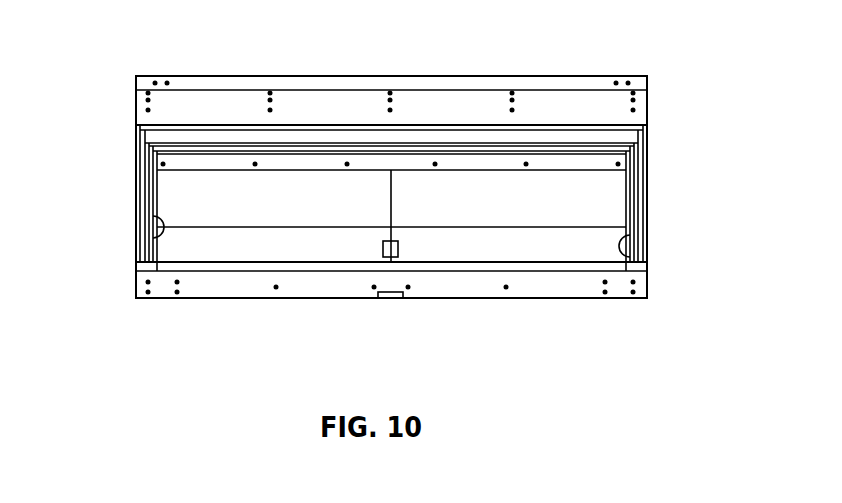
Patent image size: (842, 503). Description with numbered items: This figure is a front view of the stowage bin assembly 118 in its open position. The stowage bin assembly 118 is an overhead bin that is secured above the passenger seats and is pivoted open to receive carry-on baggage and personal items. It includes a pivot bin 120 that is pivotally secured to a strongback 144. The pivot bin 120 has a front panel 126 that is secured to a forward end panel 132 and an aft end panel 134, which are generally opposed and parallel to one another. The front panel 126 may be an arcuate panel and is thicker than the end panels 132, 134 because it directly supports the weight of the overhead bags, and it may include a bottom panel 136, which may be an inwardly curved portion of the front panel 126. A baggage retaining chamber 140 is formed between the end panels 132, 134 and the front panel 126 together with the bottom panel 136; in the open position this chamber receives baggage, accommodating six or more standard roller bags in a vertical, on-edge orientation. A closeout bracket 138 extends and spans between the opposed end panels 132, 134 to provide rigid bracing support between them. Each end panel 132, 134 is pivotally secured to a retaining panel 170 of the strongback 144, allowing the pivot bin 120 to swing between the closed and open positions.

The stowage bin assembly 118 is at (265, 322).
The pivot bin 120 is at (447, 303).
The front panel 126 is at (340, 298).
The forward end panel 132 is at (157, 243).
The aft end panel 134 is at (627, 257).
The bottom panel 136 is at (546, 210).
The closeout bracket 138 is at (188, 150).
The baggage retaining chamber 140 is at (595, 188).
The strongback 144 is at (257, 77).
The retaining panel 170 is at (137, 213).